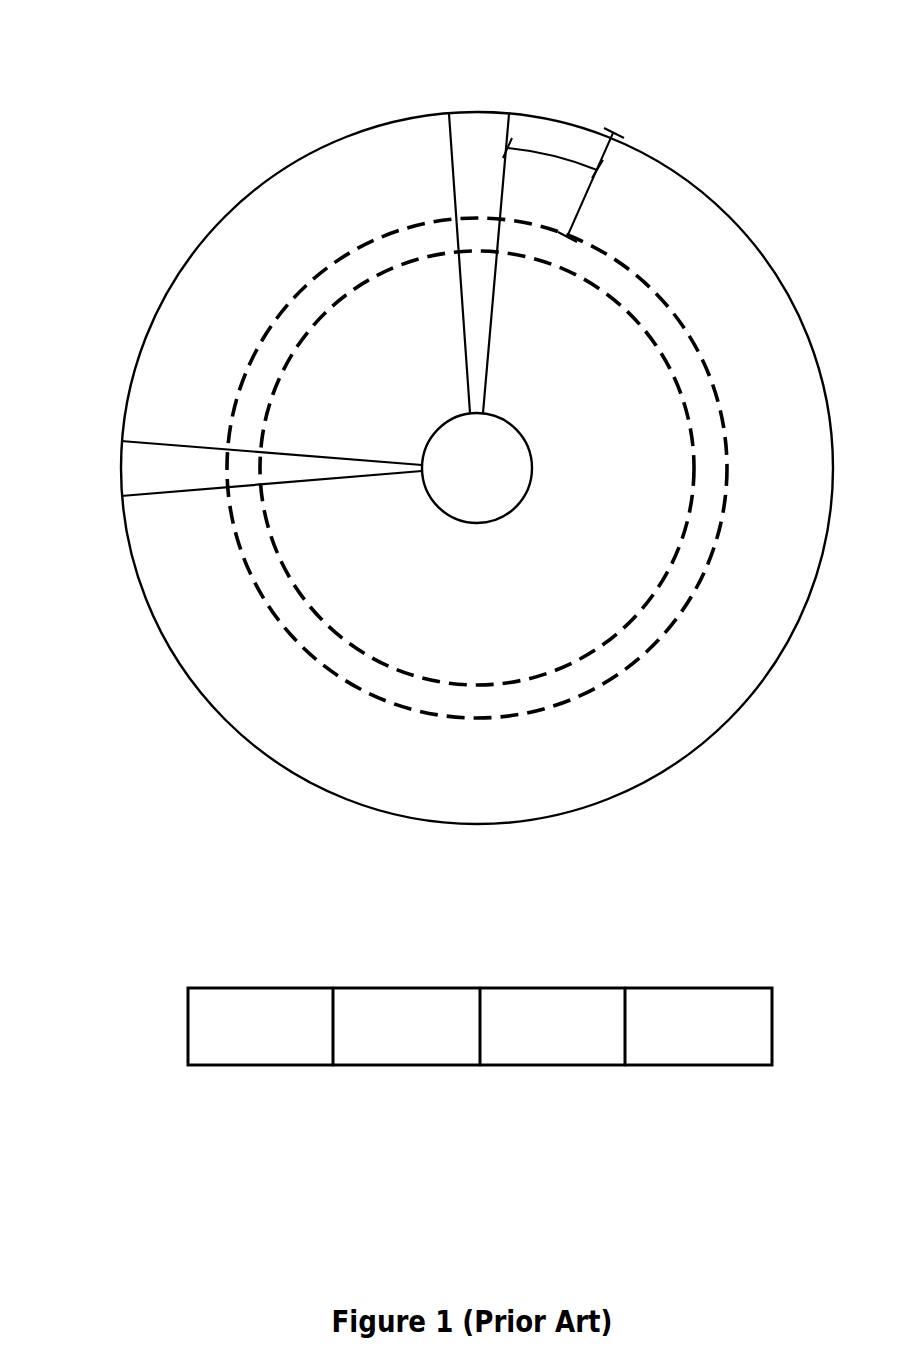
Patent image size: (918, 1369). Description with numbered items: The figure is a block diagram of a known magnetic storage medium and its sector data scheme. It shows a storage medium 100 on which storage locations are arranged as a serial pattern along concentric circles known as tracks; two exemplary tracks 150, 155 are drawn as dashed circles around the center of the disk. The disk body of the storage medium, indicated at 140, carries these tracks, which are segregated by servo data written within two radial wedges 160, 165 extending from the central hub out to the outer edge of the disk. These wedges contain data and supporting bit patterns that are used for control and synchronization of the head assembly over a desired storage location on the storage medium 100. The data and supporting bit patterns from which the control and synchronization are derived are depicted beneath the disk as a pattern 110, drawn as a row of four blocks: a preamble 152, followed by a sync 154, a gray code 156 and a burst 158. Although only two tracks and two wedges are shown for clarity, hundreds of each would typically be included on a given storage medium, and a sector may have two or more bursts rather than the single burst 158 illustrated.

The storage medium 100 is at (128, 68).
The pattern 110 is at (612, 951).
The magnetic disk 140 is at (721, 209).
The track 150 is at (640, 277).
The preamble 152 is at (241, 1056).
The sync 154 is at (387, 1056).
The track 155 is at (651, 337).
The gray code 156 is at (534, 1056).
The burst 158 is at (681, 1056).
The wedge 160 is at (477, 119).
The wedge 165 is at (128, 473).